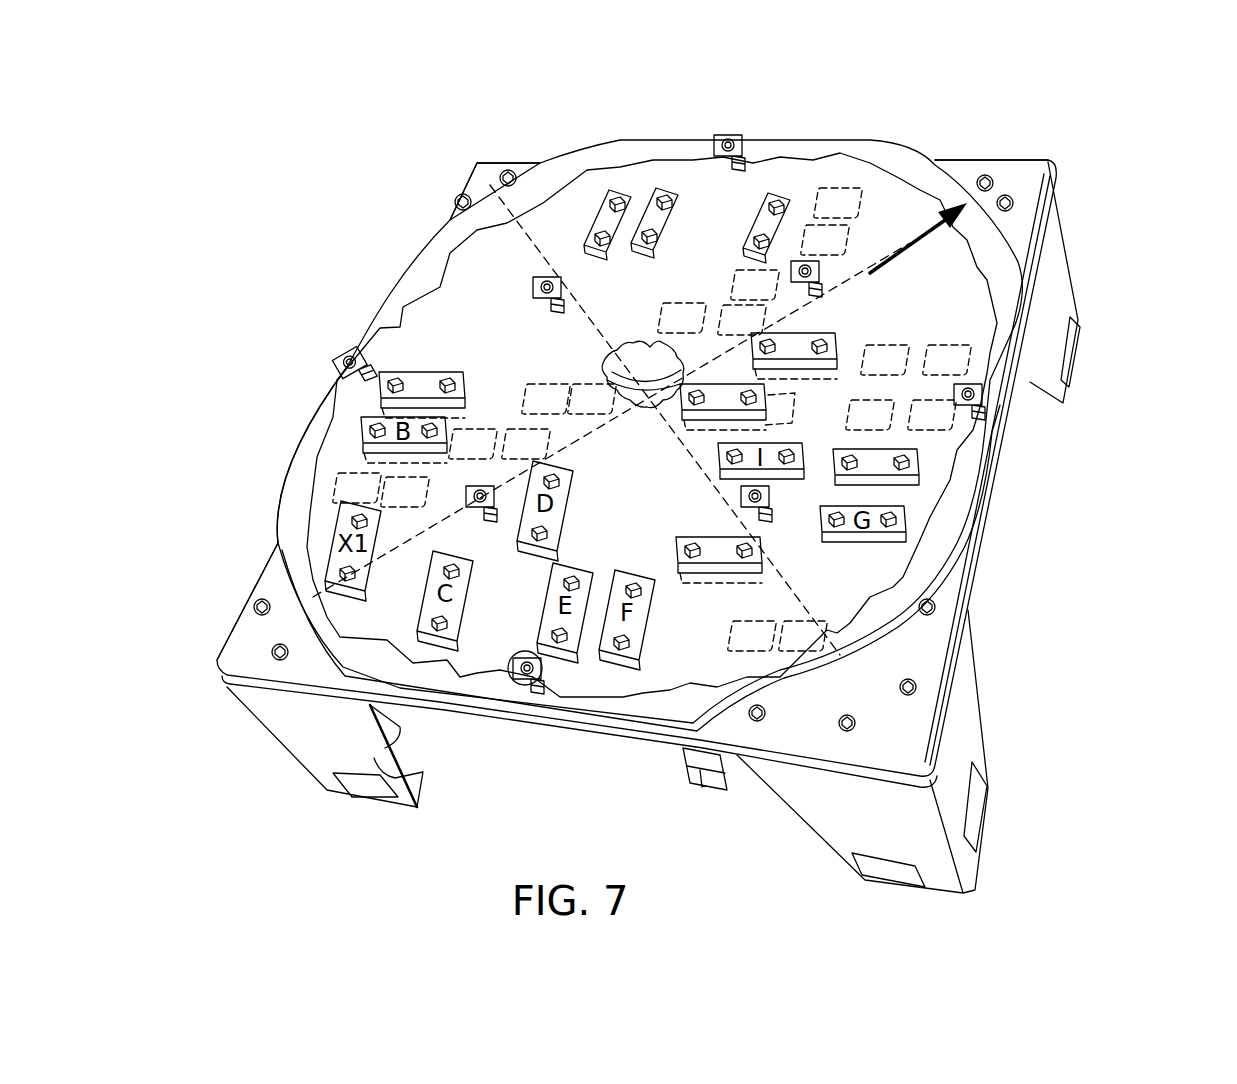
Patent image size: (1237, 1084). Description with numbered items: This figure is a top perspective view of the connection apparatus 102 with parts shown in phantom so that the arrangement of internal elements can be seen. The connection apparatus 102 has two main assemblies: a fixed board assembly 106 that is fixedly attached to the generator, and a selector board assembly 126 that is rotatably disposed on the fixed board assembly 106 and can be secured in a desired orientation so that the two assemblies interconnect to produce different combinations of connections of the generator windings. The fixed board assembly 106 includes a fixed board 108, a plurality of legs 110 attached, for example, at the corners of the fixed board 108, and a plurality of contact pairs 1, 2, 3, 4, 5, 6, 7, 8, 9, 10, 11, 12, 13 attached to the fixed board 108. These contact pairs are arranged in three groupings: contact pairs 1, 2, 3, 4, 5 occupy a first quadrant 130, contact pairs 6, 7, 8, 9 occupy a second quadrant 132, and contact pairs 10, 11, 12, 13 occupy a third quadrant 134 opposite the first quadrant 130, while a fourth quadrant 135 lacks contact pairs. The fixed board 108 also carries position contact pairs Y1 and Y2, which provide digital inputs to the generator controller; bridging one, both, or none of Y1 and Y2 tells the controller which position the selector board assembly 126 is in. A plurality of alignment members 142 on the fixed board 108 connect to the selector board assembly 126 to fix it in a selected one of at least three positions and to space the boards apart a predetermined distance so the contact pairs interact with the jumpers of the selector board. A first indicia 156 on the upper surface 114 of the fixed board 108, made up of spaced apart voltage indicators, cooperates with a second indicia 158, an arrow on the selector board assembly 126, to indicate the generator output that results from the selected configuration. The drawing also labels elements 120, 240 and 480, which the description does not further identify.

The contact pair 1 is at (578, 433).
The contact pair 2 is at (456, 427).
The contact pair 3 is at (478, 377).
The contact pair 4 is at (496, 432).
The contact pair 5 is at (400, 508).
The contact pair 6 is at (650, 313).
The contact pair 7 is at (772, 303).
The contact pair 8 is at (742, 237).
The contact pair 9 is at (862, 218).
The contact pair 10 is at (912, 340).
The contact pair 11 is at (838, 328).
The contact pair 12 is at (775, 416).
The contact pair 13 is at (932, 448).
The connection apparatus 102 is at (340, 308).
The fixed board assembly 106 is at (982, 603).
The fixed board 108 is at (975, 553).
The legs 110 is at (1057, 292).
The upper surface 114 is at (817, 723).
The corner mounting tab 120 is at (1011, 190).
The selector board assembly 126 is at (990, 452).
The first quadrant 130 is at (455, 326).
The second quadrant 132 is at (688, 232).
The third quadrant 134 is at (897, 279).
The fourth quadrant 135 is at (613, 464).
The alignment members 142 is at (566, 287).
The first indicia 156 is at (478, 160).
The second indicia 158 is at (948, 175).
The mounting tab 240 is at (481, 190).
The mounting bolts 480 is at (279, 629).
The position contact pair Y1 is at (715, 582).
The position contact pair Y2 is at (786, 619).